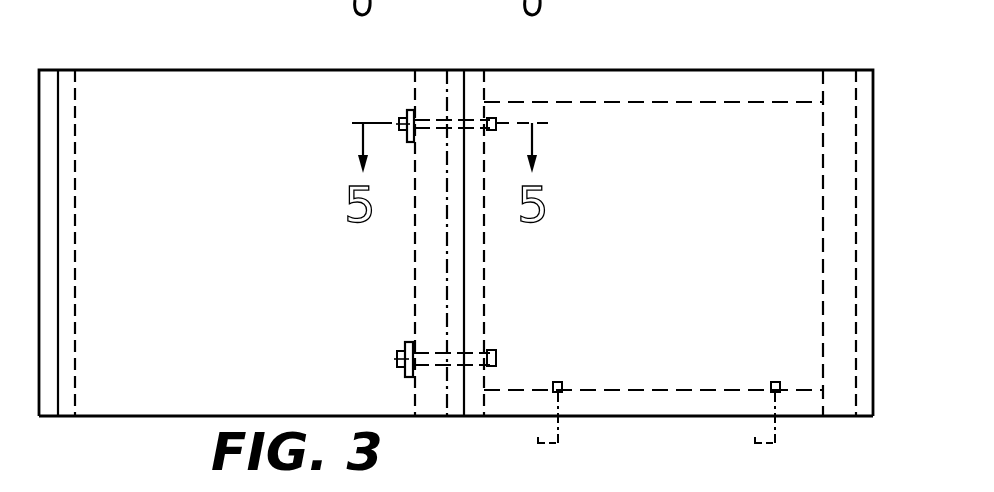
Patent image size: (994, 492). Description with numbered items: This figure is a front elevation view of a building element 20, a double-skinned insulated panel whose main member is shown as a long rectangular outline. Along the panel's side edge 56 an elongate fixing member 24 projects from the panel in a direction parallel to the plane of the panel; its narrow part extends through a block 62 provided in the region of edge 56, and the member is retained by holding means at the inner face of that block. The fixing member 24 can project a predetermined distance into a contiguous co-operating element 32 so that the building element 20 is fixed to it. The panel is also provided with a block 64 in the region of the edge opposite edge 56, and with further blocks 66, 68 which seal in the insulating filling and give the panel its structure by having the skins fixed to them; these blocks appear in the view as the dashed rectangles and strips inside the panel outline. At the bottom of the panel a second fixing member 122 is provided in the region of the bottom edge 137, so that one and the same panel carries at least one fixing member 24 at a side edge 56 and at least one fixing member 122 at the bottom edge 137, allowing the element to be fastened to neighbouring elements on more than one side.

The building element 20 is at (606, 66).
The fixing member 24 is at (425, 146).
The co-operating element 32 is at (218, 63).
The edge 56 is at (436, 238).
The block 62 is at (476, 82).
The block 64 is at (431, 81).
The block 66 is at (677, 82).
The block 68 is at (716, 411).
The fixing member 122 is at (785, 444).
The bottom edge 137 is at (640, 432).